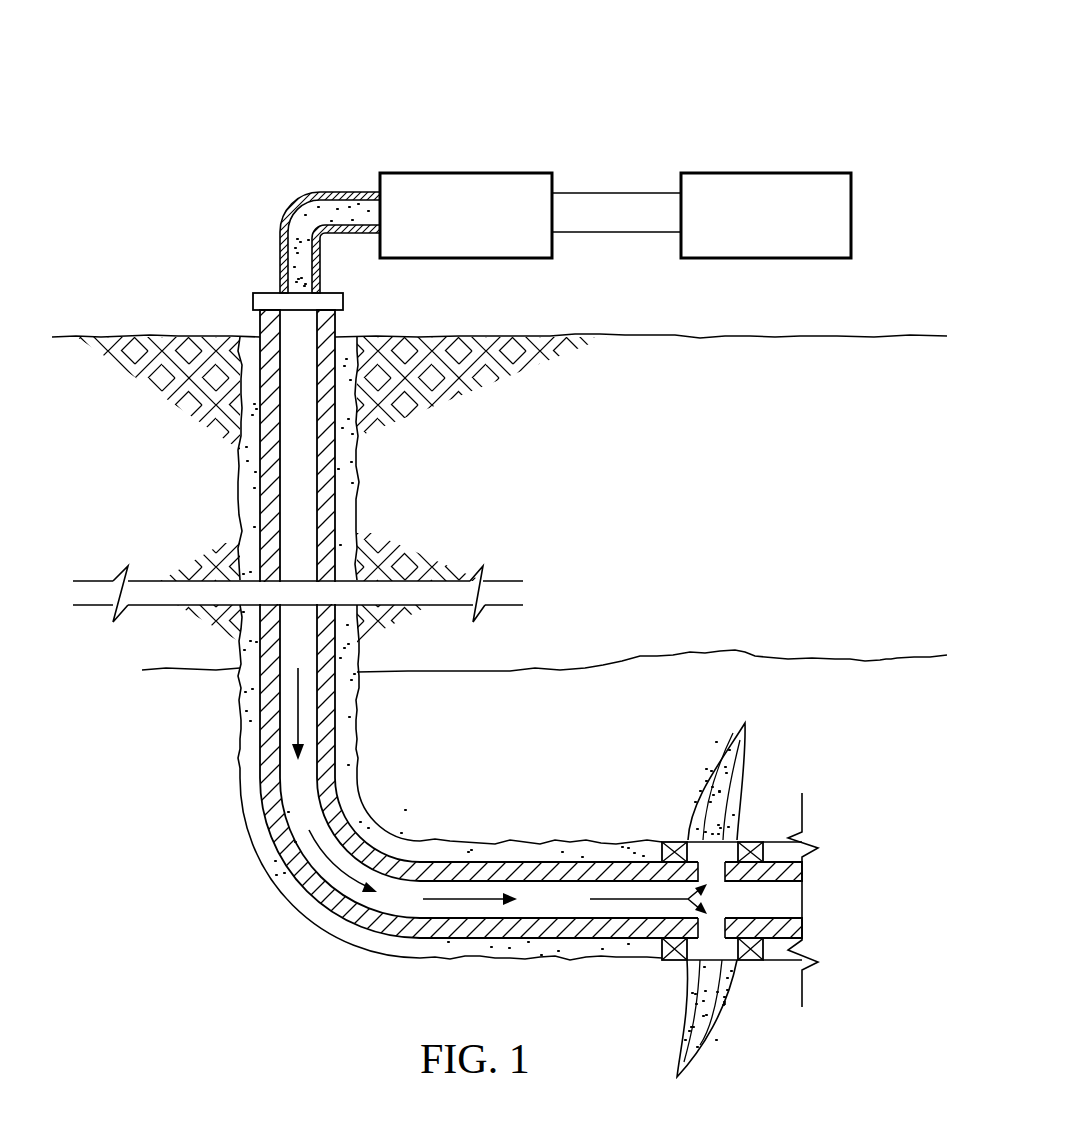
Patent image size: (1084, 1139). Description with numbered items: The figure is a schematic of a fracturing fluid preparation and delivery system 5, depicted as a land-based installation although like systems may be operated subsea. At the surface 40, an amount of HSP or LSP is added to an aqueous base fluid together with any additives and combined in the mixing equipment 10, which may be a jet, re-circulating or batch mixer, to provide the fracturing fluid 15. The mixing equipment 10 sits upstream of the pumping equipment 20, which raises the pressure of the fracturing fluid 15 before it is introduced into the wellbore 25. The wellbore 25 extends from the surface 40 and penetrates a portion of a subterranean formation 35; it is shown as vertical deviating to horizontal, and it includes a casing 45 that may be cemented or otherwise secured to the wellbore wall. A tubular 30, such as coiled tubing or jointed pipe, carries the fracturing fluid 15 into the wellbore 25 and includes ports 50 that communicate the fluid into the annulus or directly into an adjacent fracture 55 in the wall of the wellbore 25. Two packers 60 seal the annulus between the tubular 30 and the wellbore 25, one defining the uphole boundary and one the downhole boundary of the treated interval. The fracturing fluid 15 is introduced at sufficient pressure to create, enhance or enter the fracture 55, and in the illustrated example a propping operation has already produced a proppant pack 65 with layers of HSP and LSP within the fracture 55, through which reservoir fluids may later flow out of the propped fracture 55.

The fracturing fluid preparation and delivery system 5 is at (298, 72).
The mixing equipment 10 is at (785, 235).
The fracturing fluid 15 is at (298, 711).
The pumping equipment 20 is at (484, 235).
The wellbore 25 is at (238, 487).
The tubular 30 is at (318, 558).
The subterranean formation 35 is at (663, 657).
The surface 40 is at (662, 337).
The casing 45 is at (330, 490).
The ports 50 is at (716, 872).
The fracture 55 is at (732, 889).
The packers 60 is at (762, 960).
The proppant pack 65 is at (713, 760).